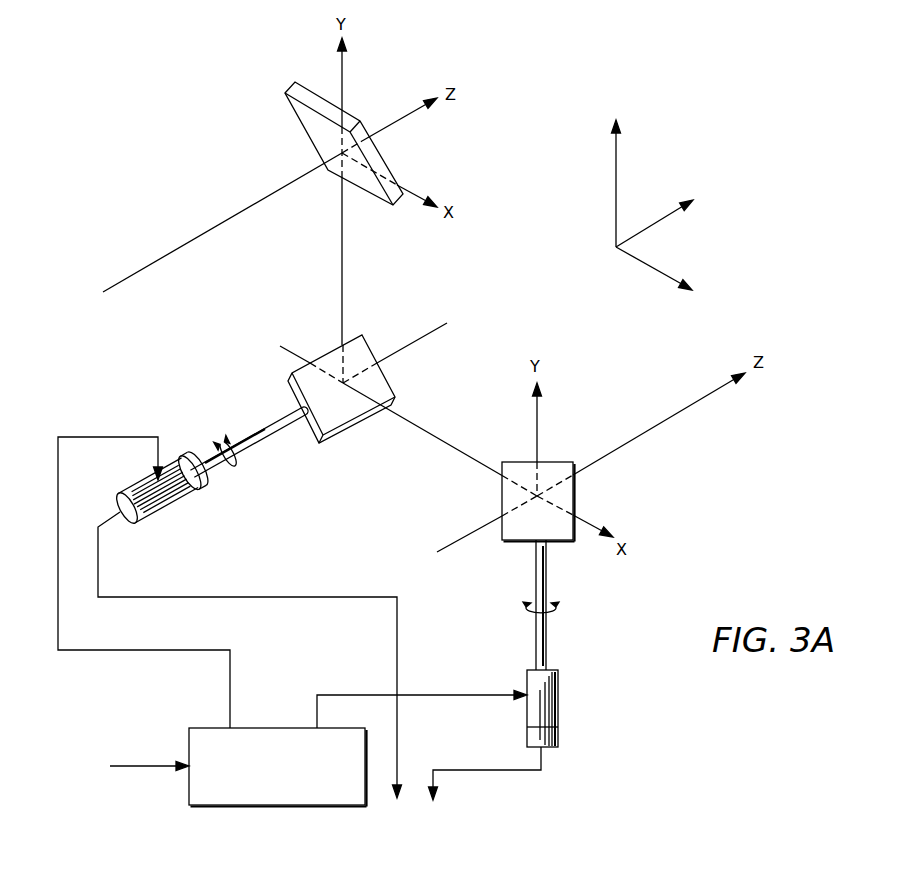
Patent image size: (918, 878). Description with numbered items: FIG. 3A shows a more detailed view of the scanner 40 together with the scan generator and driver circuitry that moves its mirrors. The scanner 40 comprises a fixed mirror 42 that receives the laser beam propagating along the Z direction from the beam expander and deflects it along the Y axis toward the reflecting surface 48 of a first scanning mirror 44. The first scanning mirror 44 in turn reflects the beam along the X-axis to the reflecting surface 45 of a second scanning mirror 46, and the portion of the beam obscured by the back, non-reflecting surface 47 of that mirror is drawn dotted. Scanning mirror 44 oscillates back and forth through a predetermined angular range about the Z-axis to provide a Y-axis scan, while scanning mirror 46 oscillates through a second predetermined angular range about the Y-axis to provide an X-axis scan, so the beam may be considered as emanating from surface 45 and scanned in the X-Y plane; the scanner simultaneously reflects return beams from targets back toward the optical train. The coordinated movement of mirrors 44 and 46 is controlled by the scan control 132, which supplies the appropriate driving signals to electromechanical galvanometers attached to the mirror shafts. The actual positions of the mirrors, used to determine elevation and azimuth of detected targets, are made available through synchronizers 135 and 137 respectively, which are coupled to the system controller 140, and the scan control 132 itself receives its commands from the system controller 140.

The scanner 40 is at (537, 194).
The fixed mirror 42 is at (388, 141).
The first scanning mirror 44 is at (370, 345).
The reflecting surface 45 is at (573, 496).
The second scanning mirror 46 is at (552, 473).
The non-reflecting surface 47 is at (555, 485).
The reflecting surface 48 is at (338, 413).
The scan control 132 is at (213, 728).
The synchronizer 135 is at (138, 520).
The synchronizer 137 is at (560, 739).
The system controller 140 is at (271, 790).